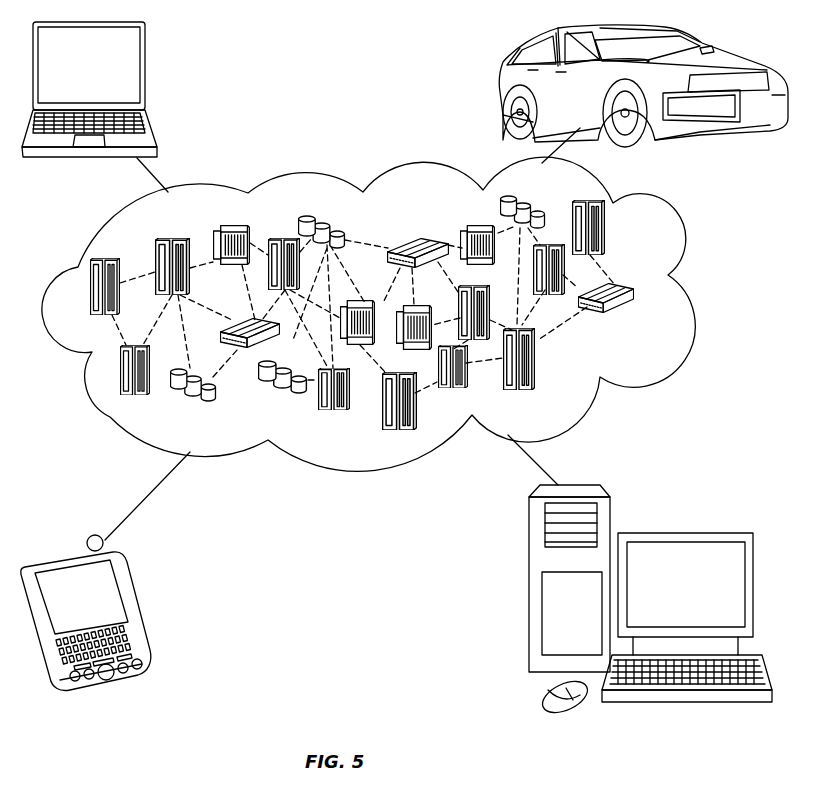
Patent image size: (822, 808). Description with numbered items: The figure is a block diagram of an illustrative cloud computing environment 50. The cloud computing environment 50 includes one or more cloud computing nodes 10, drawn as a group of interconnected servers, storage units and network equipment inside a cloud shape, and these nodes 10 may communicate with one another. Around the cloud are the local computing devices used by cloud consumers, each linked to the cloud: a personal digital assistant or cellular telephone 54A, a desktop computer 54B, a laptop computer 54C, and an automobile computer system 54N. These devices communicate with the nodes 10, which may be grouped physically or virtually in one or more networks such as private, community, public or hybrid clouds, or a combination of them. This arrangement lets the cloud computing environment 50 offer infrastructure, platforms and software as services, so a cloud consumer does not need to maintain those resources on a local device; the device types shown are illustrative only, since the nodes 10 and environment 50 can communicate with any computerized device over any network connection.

The cloud computing nodes 10 is at (387, 334).
The cloud computing environment 50 is at (687, 295).
The personal digital assistant (PDA) or cellular telephone 54A is at (135, 608).
The desktop computer 54B is at (682, 533).
The laptop computer 54C is at (145, 70).
The automobile computer system 54N is at (503, 85).